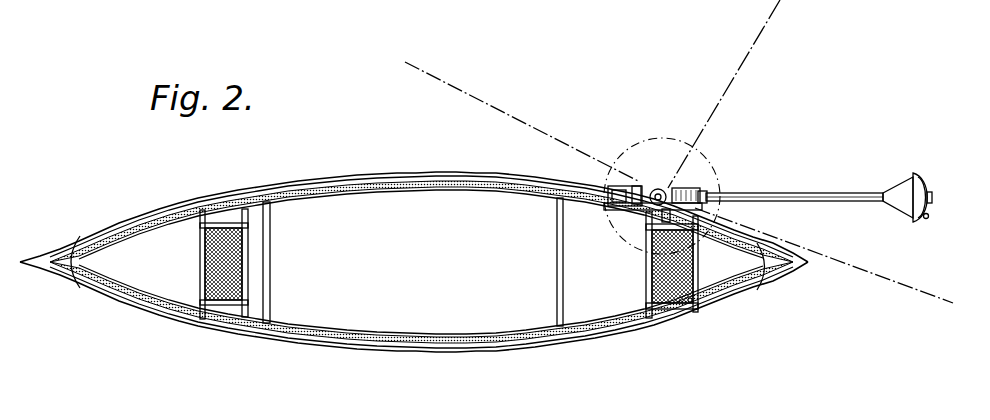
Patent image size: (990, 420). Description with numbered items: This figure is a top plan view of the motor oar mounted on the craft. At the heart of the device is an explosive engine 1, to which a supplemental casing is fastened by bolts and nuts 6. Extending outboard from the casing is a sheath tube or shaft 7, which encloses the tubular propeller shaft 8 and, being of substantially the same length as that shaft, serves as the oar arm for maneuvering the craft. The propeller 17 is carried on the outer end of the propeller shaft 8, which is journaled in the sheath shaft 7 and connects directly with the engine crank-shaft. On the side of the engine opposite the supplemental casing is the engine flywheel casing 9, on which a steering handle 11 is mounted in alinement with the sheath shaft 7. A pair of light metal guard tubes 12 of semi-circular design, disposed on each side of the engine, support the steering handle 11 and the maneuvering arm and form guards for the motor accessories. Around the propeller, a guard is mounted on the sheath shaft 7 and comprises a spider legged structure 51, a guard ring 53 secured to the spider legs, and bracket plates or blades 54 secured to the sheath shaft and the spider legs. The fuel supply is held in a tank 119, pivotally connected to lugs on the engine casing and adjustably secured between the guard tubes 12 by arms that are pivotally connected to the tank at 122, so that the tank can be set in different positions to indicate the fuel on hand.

The explosive engine 1 is at (636, 185).
The steering handle 11 is at (632, 210).
The engine flywheel casing 9 is at (662, 215).
The guard tubes 12 is at (660, 188).
The pivotal connection of arms to tank 122 is at (692, 191).
The fuel tank 119 is at (703, 194).
The sheath tube or shaft 7 is at (806, 193).
The bracket plates or blades 54 is at (900, 210).
The spider legged structure 51 is at (914, 192).
The propeller 17 is at (930, 193).
The guard ring 53 is at (929, 218).
The nuts 6 is at (522, 122).
The propeller shaft 8 is at (824, 255).